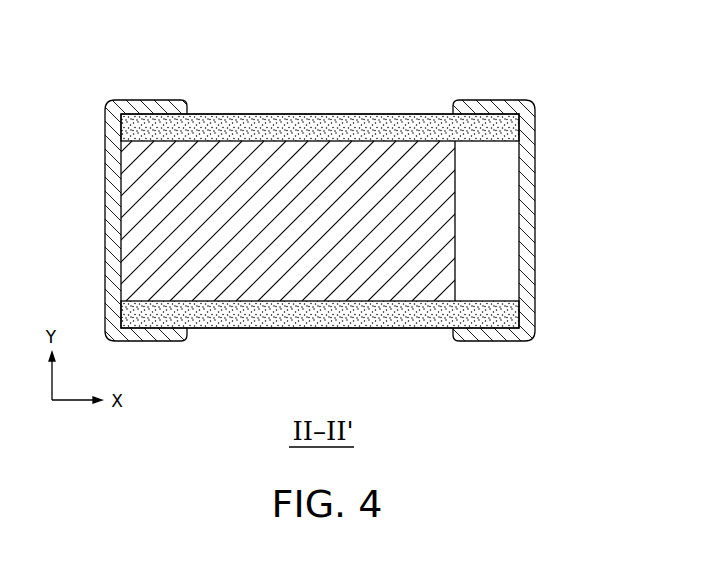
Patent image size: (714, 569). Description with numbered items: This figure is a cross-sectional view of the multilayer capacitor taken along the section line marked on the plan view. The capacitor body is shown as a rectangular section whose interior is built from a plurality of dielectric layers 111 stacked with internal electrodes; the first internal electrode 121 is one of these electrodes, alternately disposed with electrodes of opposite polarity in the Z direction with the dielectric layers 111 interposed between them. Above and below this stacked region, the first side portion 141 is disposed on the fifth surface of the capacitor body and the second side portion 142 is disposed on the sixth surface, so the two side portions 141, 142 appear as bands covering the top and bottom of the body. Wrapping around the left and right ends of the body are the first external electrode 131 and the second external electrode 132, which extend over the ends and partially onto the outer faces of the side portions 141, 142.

The dielectric layer 111 is at (507, 223).
The first internal electrode 121 is at (133, 225).
The first external electrode 131 is at (150, 100).
The second external electrode 132 is at (490, 100).
The first side portion 141 is at (255, 112).
The second side portion 142 is at (250, 318).